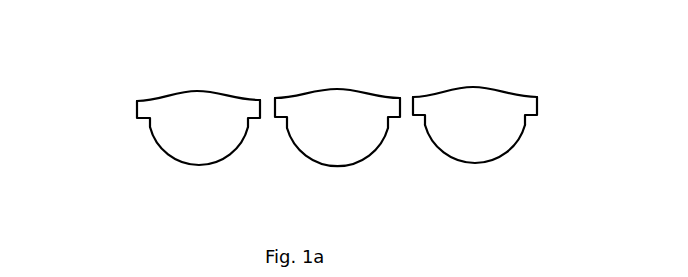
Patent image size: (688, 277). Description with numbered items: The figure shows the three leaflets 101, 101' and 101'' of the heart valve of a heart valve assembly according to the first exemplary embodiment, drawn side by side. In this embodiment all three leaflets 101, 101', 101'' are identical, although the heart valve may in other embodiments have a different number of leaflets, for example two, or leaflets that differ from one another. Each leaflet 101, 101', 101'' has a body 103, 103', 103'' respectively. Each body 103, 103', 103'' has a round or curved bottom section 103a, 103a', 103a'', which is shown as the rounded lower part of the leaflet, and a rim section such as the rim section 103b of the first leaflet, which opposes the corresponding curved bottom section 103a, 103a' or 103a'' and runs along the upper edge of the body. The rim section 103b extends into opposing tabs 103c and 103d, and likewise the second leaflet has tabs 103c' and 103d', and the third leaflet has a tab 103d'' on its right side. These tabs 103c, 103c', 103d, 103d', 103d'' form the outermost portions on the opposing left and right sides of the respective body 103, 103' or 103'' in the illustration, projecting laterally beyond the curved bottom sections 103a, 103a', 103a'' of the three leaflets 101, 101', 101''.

The leaflet 101 is at (141, 99).
The body 103 is at (157, 99).
The curved bottom section 103a is at (165, 160).
The rim section 103b is at (199, 92).
The tab 103c is at (102, 98).
The tab 103d is at (204, 65).
The leaflet 101' is at (323, 105).
The body 103' is at (357, 104).
The curved bottom section 103a' is at (363, 168).
The tab 103c' is at (326, 64).
The tab 103d' is at (363, 83).
The leaflet 101'' is at (522, 127).
The body 103'' is at (489, 127).
The curved bottom section 103a'' is at (495, 171).
The tab 103d'' is at (498, 81).